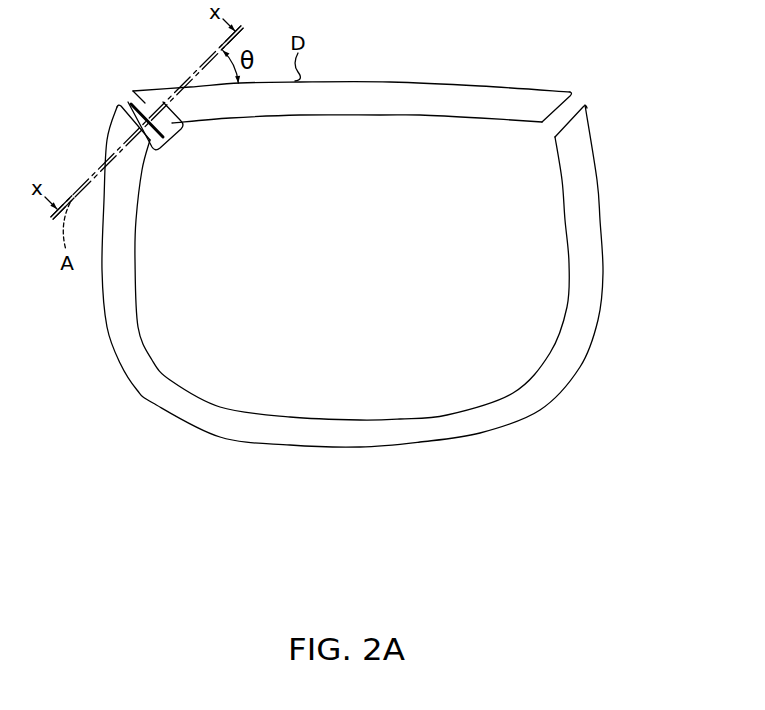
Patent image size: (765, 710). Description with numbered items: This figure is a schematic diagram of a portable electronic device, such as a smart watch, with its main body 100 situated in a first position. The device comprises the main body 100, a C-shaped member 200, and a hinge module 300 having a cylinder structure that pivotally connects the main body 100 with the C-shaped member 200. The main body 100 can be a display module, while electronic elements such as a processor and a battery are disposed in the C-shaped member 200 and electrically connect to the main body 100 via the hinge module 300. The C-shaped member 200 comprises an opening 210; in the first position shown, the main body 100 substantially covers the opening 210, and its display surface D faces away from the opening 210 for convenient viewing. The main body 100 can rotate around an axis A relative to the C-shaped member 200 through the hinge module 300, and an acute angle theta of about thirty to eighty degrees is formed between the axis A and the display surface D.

The main body 100 is at (415, 81).
The C-shaped member 200 is at (117, 293).
The opening 210 is at (355, 142).
The hinge module 300 is at (158, 142).